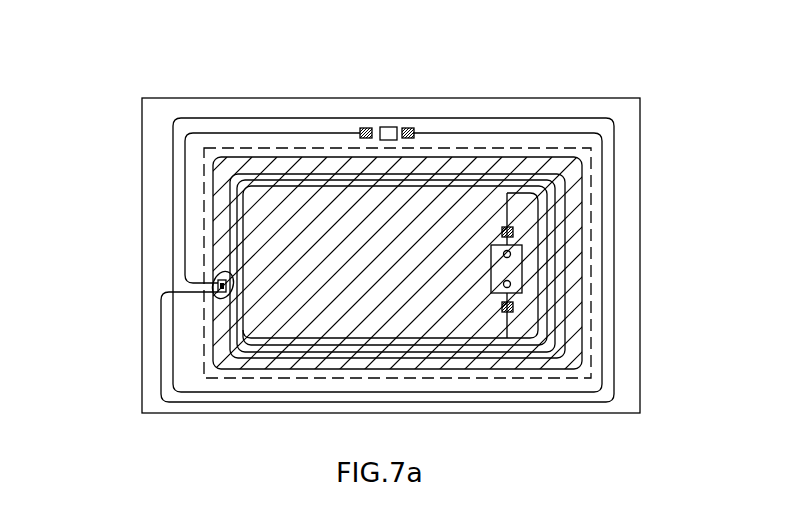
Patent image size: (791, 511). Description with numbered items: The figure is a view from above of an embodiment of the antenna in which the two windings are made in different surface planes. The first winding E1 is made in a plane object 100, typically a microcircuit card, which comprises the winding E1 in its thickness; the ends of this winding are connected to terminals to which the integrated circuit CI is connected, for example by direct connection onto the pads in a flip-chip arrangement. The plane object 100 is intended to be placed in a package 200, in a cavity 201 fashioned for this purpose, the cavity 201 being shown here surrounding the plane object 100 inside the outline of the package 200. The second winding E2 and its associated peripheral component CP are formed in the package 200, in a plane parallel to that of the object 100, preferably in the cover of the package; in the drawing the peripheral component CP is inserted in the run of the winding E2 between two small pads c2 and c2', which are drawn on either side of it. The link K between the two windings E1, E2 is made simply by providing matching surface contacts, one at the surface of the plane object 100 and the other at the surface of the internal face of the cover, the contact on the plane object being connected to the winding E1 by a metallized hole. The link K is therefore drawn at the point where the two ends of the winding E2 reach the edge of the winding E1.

The package 200 is at (630, 112).
The second winding E2 is at (615, 157).
The peripheral component CP is at (389, 127).
The capacitor contact pad c2 is at (340, 93).
The capacitor contact pad c2' is at (430, 96).
The cavity 201 is at (592, 216).
The plane object 100 is at (563, 324).
The first winding E1 is at (465, 190).
The integrated circuit CI is at (522, 273).
The link K is at (218, 283).